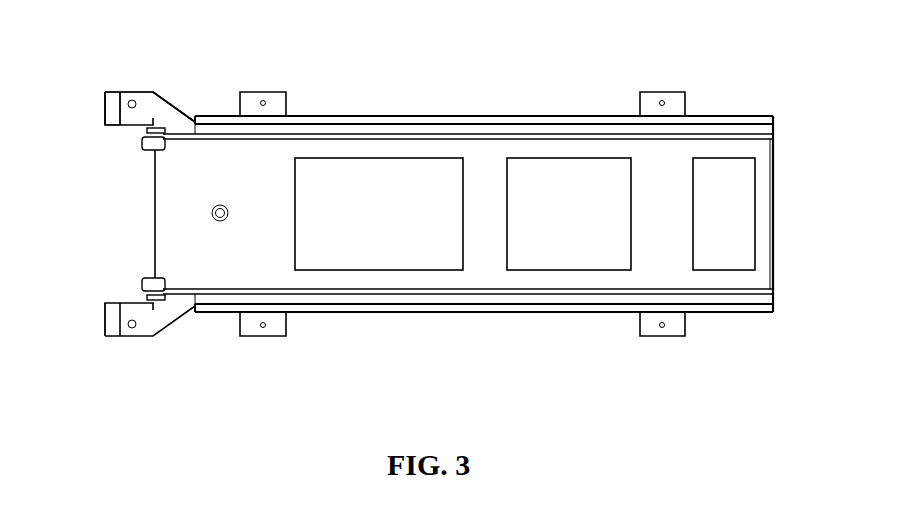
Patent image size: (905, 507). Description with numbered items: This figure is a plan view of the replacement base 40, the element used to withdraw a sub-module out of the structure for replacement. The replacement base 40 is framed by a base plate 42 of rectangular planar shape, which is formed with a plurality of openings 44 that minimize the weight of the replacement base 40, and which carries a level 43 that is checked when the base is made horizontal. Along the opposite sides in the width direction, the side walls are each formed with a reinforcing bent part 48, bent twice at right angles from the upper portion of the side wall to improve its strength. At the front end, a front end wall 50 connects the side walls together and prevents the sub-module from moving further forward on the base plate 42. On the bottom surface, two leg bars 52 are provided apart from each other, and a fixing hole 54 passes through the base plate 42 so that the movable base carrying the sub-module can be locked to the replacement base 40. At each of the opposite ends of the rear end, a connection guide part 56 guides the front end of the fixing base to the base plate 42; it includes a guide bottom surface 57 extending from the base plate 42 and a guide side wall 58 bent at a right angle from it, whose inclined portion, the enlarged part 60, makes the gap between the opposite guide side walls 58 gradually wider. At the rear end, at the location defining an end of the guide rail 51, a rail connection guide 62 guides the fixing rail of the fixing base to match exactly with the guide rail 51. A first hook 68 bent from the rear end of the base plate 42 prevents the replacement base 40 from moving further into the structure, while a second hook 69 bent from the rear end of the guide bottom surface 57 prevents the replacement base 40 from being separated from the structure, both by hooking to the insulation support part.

The replacement base 40 is at (511, 338).
The base plate 42 is at (245, 160).
The level 43 is at (230, 211).
The openings 44 is at (630, 160).
The reinforcing bent part 48 is at (525, 116).
The front end wall 50 is at (774, 158).
The guide rail 51 is at (583, 132).
The leg bar 52 is at (265, 92).
The fixing hole 54 is at (460, 134).
The connection guide part 56 is at (103, 92).
The guide bottom surface 57 is at (147, 88).
The guide side wall 58 is at (128, 88).
The enlarged part 60 is at (172, 98).
The rail connection guide 62 is at (140, 145).
The first hook 68 is at (155, 205).
The second hook 69 is at (103, 108).